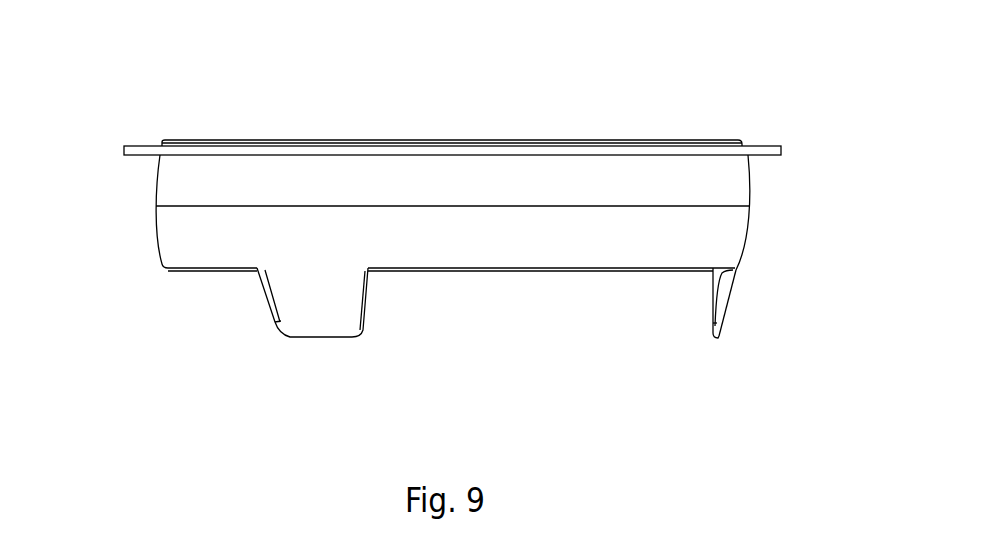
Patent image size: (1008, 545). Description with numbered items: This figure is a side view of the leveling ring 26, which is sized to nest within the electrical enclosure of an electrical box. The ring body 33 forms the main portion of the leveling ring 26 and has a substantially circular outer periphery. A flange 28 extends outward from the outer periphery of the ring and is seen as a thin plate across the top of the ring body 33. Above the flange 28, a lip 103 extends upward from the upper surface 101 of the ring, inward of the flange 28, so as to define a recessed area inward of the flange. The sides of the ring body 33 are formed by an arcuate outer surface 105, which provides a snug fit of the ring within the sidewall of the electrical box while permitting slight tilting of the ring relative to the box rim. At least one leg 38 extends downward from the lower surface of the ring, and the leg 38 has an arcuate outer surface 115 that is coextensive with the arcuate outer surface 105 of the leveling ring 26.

The leveling ring 26 is at (133, 114).
The flange 28 is at (783, 150).
The ring body 33 is at (170, 190).
The leg 38 is at (323, 338).
The upper surface 101 is at (755, 146).
The lip 103 is at (641, 140).
The arcuate outer surface 105 is at (158, 246).
The arcuate outer surface of leg 115 is at (736, 302).